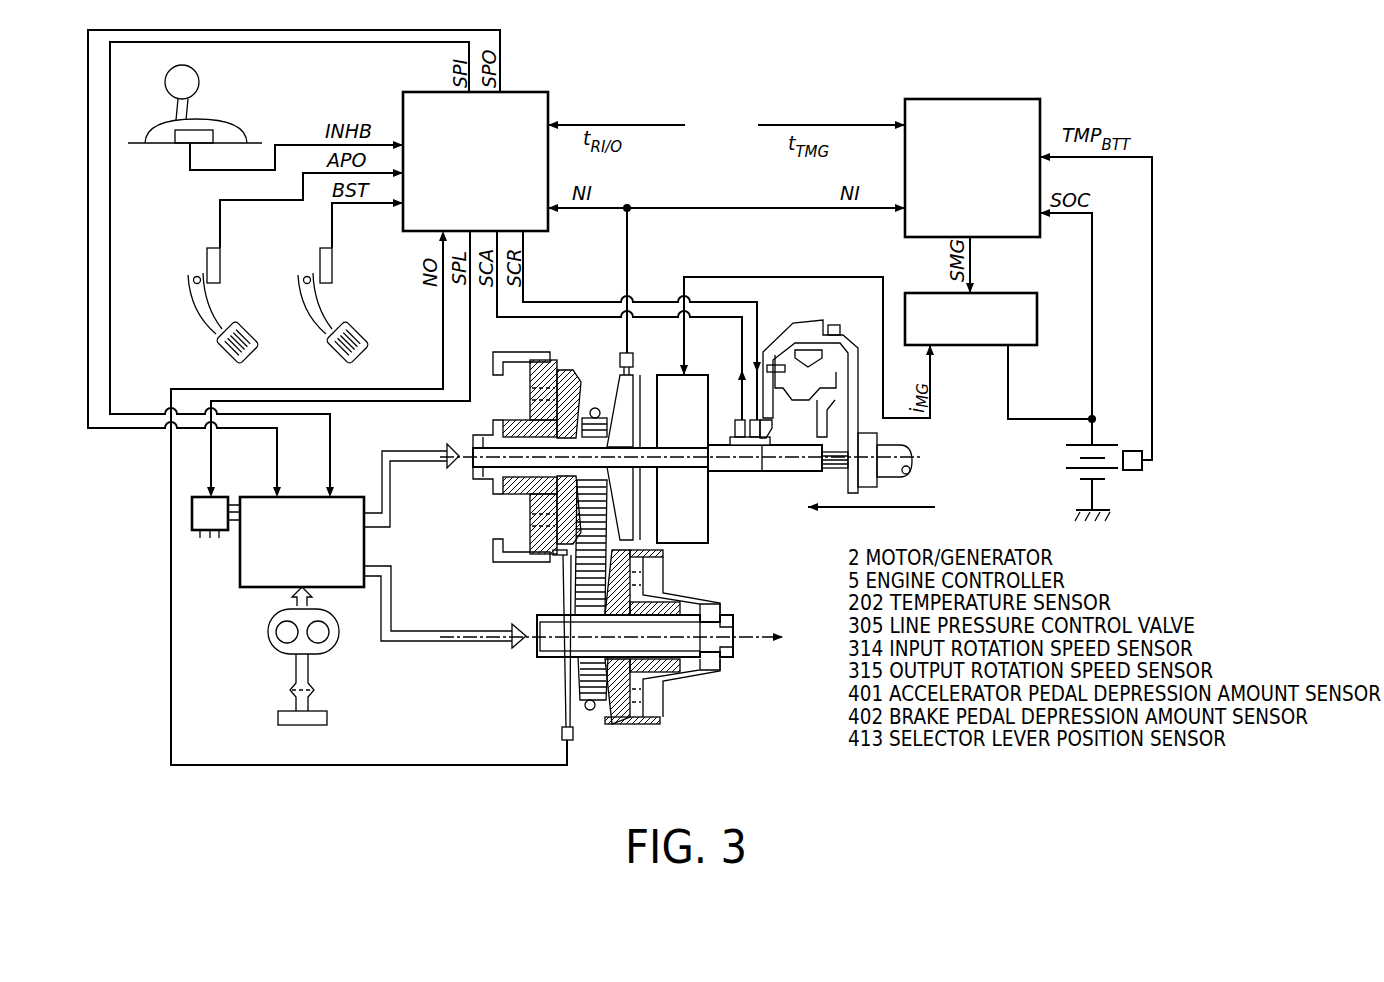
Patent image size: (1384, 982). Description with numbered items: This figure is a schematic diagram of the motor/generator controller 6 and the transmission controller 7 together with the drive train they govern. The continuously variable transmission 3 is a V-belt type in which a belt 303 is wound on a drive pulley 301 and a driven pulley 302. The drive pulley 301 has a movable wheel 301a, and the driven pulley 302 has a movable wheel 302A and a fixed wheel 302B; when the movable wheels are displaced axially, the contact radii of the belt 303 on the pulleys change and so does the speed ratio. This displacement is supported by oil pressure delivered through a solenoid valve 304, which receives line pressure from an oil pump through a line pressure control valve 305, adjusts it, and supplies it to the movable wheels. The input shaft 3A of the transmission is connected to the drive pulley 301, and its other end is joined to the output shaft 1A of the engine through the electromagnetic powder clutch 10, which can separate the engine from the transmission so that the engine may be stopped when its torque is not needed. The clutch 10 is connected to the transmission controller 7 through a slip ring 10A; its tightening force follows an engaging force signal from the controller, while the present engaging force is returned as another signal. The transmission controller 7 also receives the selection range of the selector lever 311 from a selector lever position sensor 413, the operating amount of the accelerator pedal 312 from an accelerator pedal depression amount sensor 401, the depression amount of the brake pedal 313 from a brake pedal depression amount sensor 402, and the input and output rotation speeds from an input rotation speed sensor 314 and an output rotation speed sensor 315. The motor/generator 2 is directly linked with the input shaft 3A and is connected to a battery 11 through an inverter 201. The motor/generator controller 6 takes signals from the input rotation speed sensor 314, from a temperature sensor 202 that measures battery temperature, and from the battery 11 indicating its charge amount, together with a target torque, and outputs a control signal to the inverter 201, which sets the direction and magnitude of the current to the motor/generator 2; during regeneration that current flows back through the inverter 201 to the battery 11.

The output shaft 1A is at (890, 448).
The motor/generator 2 is at (732, 549).
The continuously variable transmission 3 is at (742, 680).
The input shaft 3A is at (717, 473).
The motor/generator controller 6 is at (1003, 99).
The transmission controller 7 is at (520, 92).
The electromagnetic powder clutch 10 is at (855, 327).
The slip ring 10A is at (752, 470).
The battery 11 is at (1045, 475).
The inverter 201 is at (1040, 313).
The temperature sensor 202 is at (1130, 472).
The drive pulley 301 is at (595, 374).
The movable wheel 301a is at (558, 370).
The driven pulley 302 is at (628, 745).
The movable wheel 302A is at (643, 727).
The fixed wheel 302B is at (625, 527).
The belt 303 is at (562, 553).
The solenoid valve 304 is at (364, 548).
The line pressure control valve 305 is at (200, 534).
The selector lever 311 is at (223, 120).
The accelerator pedal 312 is at (215, 347).
The brake pedal 313 is at (357, 332).
The input rotation speed sensor 314 is at (633, 360).
The output rotation speed sensor 315 is at (562, 733).
The accelerator pedal depression amount sensor 401 is at (221, 262).
The brake pedal depression amount sensor 402 is at (332, 262).
The selector lever position sensor 413 is at (180, 143).